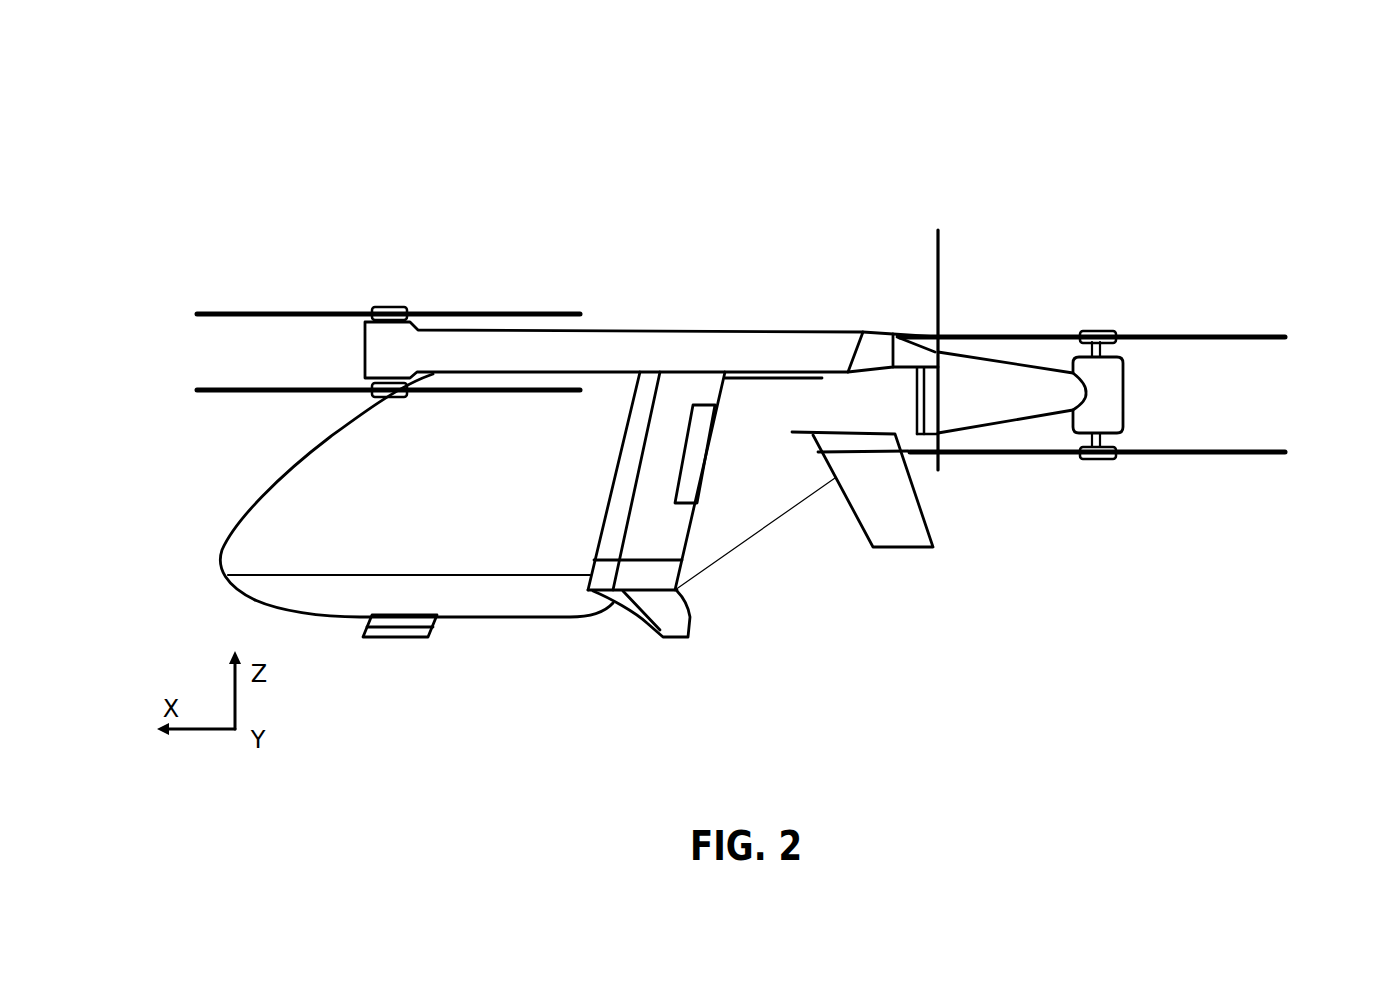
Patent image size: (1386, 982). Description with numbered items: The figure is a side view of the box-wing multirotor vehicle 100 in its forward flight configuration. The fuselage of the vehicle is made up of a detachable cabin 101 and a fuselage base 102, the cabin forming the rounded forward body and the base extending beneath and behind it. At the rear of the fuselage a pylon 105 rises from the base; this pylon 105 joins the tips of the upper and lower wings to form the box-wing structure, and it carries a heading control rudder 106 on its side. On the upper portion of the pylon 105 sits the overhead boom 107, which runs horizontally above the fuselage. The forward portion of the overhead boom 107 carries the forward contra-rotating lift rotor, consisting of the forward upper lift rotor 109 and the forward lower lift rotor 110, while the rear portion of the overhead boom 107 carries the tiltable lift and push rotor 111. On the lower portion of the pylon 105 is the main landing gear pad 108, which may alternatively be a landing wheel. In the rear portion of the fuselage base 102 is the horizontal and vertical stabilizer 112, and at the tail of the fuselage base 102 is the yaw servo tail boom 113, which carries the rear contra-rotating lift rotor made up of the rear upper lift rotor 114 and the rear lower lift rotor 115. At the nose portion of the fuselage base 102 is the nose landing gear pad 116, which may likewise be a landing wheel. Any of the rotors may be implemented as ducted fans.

The box-wing multirotor vehicle 100 is at (733, 190).
The detachable cabin 101 is at (280, 462).
The fuselage base 102 is at (557, 620).
The pylon 105 is at (688, 545).
The heading control rudder 106 is at (705, 468).
The overhead boom 107 is at (752, 330).
The main landing gear pad 108 is at (693, 633).
The forward upper lift rotor 109 is at (382, 310).
The forward lower lift rotor 110 is at (365, 390).
The tiltable lift and push rotor 111 is at (940, 303).
The horizontal and vertical stabilizer 112 is at (933, 547).
The yaw servo tail boom 113 is at (1125, 393).
The rear upper lift rotor 114 is at (1100, 330).
The rear lower lift rotor 115 is at (1098, 453).
The nose landing gear pad 116 is at (405, 637).